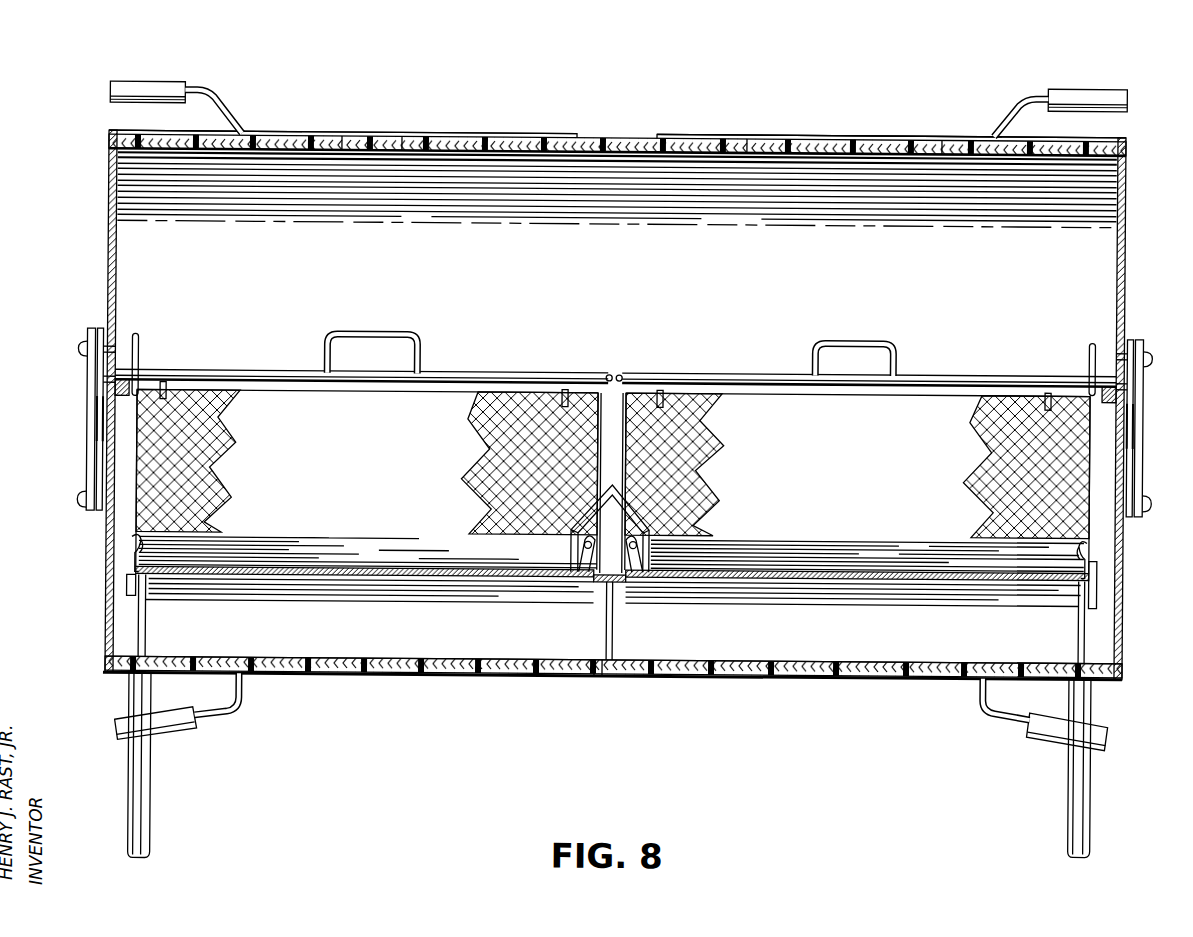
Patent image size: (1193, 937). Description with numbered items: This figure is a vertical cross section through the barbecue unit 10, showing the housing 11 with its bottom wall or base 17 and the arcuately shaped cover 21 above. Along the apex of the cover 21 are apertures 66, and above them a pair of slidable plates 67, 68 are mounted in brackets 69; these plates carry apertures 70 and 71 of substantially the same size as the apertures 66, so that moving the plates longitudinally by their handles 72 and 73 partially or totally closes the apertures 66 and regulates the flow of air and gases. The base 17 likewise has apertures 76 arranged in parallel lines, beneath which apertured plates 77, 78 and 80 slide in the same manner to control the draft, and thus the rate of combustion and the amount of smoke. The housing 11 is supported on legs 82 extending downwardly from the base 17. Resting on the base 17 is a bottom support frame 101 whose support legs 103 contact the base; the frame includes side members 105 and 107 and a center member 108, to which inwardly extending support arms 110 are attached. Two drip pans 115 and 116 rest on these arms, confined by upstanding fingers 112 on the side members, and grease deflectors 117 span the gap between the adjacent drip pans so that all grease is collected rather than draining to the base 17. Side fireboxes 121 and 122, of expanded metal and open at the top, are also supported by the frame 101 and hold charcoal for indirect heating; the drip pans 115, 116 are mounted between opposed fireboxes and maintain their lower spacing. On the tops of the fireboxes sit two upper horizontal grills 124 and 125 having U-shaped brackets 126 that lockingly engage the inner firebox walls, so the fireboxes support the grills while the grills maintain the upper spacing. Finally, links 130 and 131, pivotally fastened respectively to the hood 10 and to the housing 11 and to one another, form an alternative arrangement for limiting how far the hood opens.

The barbecue unit 10 is at (514, 126).
The housing 11 is at (100, 519).
The bottom wall or base 17 is at (600, 678).
The cover 21 is at (600, 136).
The apertures 66 is at (485, 160).
The slidable plate 67 is at (262, 138).
The slidable plate 68 is at (826, 140).
The brackets 69 is at (348, 138).
The apertures 70 is at (432, 140).
The apertures 71 is at (975, 140).
The handle 72 is at (136, 84).
The handle 73 is at (1100, 90).
The apertures 76 is at (800, 660).
The apertured plate 77 is at (837, 678).
The apertured plate 78 is at (611, 711).
The apertured plate 80 is at (408, 677).
The legs 82 is at (142, 821).
The bottom support frame 101 is at (380, 612).
The support legs 103 is at (140, 628).
The side member 105 is at (1098, 597).
The side member 107 is at (126, 590).
The center member 108 is at (598, 582).
The support arms 110 is at (203, 582).
The upstanding fingers 112 is at (130, 552).
The drip pan 115 is at (742, 538).
The drip pan 116 is at (315, 540).
The grease deflectors 117 is at (662, 462).
The side firebox 121 is at (877, 462).
The side firebox 122 is at (395, 452).
The upper horizontal grill 124 is at (232, 372).
The upper horizontal grill 125 is at (978, 372).
The U-shaped brackets 126 is at (168, 388).
The link 130 is at (86, 373).
The link 131 is at (98, 448).